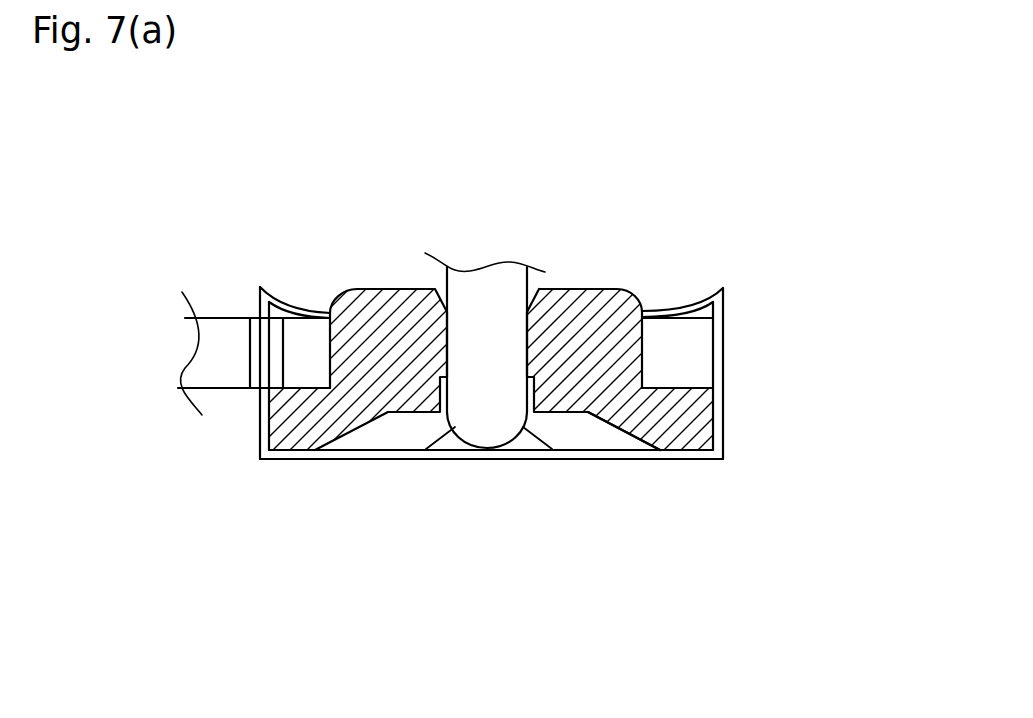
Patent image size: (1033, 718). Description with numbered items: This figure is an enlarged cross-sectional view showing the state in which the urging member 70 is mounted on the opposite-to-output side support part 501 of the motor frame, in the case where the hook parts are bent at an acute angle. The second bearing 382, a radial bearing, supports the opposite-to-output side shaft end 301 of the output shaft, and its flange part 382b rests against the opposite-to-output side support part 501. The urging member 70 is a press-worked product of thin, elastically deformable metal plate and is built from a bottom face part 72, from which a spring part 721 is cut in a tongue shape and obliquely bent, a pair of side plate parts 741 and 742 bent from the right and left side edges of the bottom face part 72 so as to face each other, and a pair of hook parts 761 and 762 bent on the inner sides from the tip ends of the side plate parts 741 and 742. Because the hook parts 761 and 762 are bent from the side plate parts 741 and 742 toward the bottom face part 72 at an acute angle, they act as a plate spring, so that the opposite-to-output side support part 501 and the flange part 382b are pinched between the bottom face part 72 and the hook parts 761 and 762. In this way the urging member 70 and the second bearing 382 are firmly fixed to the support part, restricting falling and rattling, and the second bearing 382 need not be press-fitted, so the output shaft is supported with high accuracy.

The urging member 70 is at (504, 411).
The bottom face part 72 is at (484, 372).
The spring part 721 is at (458, 450).
The side plate part 741 is at (720, 398).
The side plate part 742 is at (265, 432).
The hook part 761 is at (687, 305).
The hook part 762 is at (300, 305).
The second bearing 382 is at (504, 328).
The flange part 382b is at (693, 432).
The opposite-to-output side shaft end 301 is at (510, 322).
The opposite-to-output side support part 501 is at (693, 345).